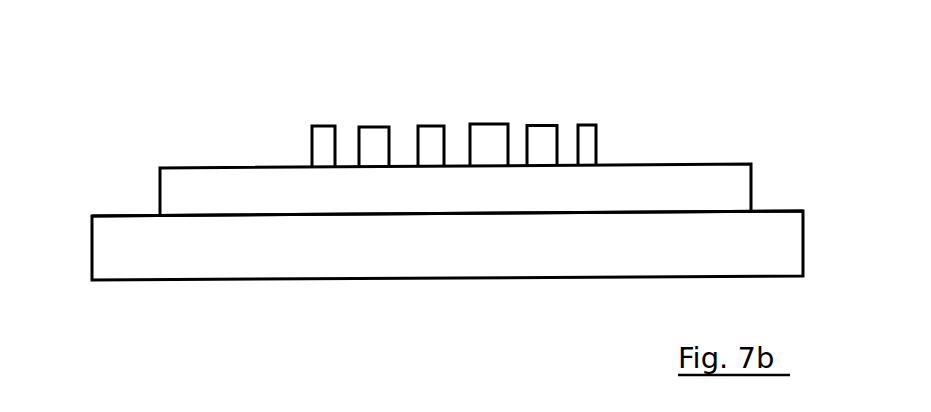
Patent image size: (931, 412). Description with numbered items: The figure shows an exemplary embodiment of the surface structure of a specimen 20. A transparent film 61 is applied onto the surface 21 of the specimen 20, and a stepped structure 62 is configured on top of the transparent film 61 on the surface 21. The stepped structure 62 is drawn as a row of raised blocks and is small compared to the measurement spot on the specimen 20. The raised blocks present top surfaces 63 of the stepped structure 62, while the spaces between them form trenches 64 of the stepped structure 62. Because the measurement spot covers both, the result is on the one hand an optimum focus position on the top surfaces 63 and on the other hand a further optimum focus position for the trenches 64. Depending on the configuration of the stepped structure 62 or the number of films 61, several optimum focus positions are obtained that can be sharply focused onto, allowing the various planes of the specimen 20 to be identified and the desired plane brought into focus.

The specimen 20 is at (116, 276).
The surface 21 is at (117, 215).
The transparent film 61 is at (729, 182).
The stepped structure 62 is at (286, 139).
The top surfaces 63 is at (329, 127).
The trenches 64 is at (458, 165).